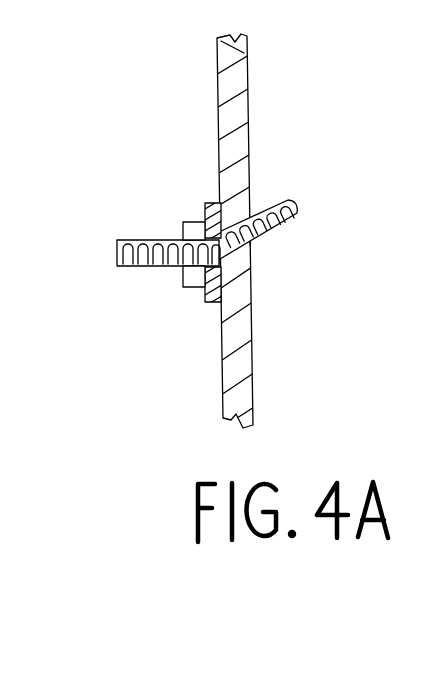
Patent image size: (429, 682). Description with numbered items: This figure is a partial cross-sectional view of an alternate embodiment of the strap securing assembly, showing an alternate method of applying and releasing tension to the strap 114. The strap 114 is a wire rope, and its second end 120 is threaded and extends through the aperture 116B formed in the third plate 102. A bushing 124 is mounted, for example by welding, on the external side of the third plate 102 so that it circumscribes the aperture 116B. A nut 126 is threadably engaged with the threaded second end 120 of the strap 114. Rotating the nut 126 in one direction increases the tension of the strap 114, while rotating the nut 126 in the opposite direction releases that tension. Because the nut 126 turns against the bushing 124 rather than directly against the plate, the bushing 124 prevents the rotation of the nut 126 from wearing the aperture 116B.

The third plate 102 is at (227, 90).
The strap 114 is at (282, 189).
The aperture 116B is at (252, 246).
The second end 120 is at (127, 238).
The bushing 124 is at (209, 303).
The nut 126 is at (192, 222).